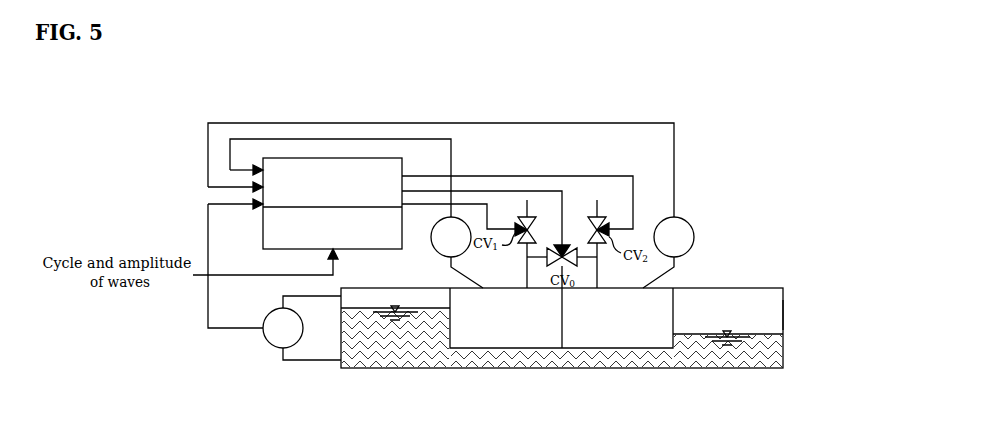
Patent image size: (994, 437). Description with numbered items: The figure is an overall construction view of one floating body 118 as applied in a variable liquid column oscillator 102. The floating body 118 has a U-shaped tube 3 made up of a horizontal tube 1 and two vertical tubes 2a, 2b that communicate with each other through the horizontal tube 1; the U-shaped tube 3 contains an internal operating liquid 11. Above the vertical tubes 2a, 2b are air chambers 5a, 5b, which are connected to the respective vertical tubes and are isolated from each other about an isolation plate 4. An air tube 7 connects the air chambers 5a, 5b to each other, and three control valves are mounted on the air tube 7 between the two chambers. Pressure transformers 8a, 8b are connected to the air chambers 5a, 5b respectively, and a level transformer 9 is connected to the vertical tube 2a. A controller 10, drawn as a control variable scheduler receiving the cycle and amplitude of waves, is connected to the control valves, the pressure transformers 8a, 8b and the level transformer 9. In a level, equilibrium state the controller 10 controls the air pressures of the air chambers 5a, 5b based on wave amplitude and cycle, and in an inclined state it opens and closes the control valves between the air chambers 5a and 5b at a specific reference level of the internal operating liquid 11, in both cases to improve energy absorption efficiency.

The horizontal tube 1 is at (536, 367).
The vertical tube 2a is at (390, 300).
The vertical tube 2b is at (748, 302).
The U-shaped tube 3 is at (785, 312).
The isolation plate 4 is at (563, 320).
The air chamber 5a is at (503, 337).
The air chamber 5b is at (618, 338).
The air tube 7 is at (537, 258).
The pressure transformer 8a is at (445, 252).
The pressure transformer 8b is at (689, 228).
The level transformer 9 is at (268, 341).
The controller 10 is at (320, 173).
The internal operating liquid 11 is at (433, 309).
The variable liquid column oscillator 102 is at (703, 184).
The floating body 118 is at (710, 280).